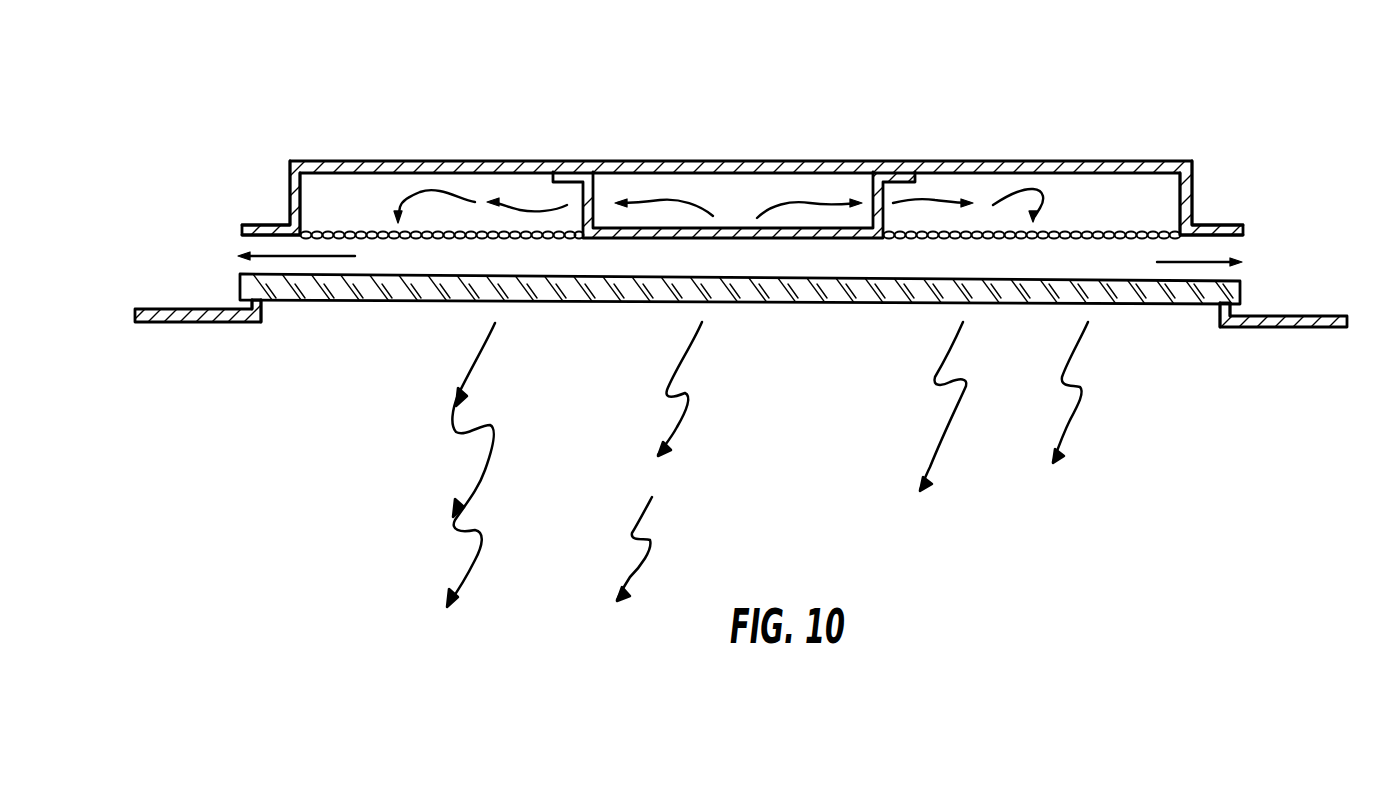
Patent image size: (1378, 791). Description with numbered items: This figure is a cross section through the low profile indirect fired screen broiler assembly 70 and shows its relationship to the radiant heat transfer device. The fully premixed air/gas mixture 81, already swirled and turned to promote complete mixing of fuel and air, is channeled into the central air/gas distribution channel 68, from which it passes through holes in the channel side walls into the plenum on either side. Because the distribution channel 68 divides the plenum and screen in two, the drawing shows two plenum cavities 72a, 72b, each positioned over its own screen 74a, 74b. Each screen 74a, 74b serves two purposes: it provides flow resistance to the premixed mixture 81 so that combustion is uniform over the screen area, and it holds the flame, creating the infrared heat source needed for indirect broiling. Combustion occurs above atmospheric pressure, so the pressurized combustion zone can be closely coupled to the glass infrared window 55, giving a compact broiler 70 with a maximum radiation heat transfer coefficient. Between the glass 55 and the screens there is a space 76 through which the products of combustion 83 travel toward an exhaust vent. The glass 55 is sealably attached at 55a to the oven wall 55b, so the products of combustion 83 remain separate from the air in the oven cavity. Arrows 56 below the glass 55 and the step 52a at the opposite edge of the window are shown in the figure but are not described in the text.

The low profile indirect fired screen broiler assembly 70 is at (228, 123).
The plenum cavity 72b is at (322, 188).
The plenum cavity 72a is at (1126, 207).
The air/gas distribution channel 68 is at (727, 190).
The air/gas mixture 81 is at (400, 207).
The screen 74b is at (478, 233).
The screen 74a is at (982, 233).
The products of combustion 83 is at (250, 252).
The infrared window 55 is at (1013, 296).
The space 76 is at (809, 261).
The oven wall 55b is at (177, 308).
The left step 52a is at (262, 318).
The sealed attachment 55a is at (1224, 307).
The flow arrows 56 is at (666, 391).